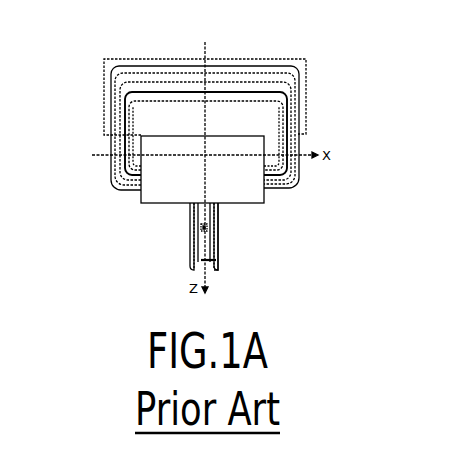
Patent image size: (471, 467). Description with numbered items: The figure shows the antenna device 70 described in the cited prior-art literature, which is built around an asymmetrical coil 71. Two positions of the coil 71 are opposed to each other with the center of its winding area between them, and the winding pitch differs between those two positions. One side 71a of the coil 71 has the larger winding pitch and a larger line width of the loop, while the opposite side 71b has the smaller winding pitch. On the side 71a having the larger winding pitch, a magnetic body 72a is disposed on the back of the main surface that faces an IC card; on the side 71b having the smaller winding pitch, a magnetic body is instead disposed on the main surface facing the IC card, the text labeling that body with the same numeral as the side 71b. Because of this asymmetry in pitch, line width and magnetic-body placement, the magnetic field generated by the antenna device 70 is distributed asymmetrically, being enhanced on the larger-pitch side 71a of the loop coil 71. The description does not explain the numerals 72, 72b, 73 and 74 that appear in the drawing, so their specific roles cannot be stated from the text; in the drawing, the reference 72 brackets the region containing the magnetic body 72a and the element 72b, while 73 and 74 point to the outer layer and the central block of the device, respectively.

The antenna device 70 is at (238, 52).
The coil 71 is at (153, 126).
The side having a larger winding pitch 71a is at (110, 78).
The side having a smaller winding pitch 71b is at (43, 67).
The secondary winding 72 is at (259, 125).
The magnetic body 72a is at (311, 90).
The inner secondary winding layer 72b is at (266, 147).
The insulating cover 73 is at (177, 66).
The core 74 is at (250, 135).